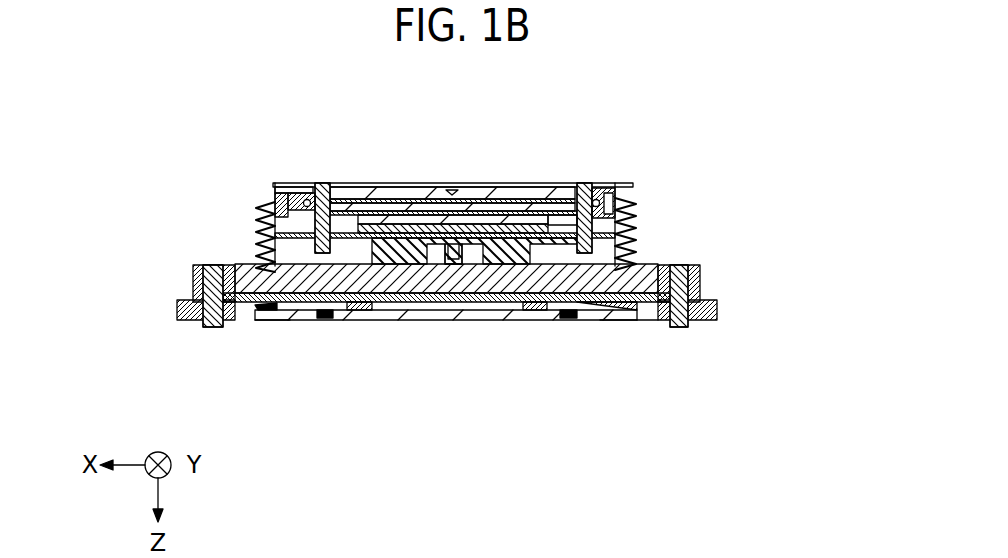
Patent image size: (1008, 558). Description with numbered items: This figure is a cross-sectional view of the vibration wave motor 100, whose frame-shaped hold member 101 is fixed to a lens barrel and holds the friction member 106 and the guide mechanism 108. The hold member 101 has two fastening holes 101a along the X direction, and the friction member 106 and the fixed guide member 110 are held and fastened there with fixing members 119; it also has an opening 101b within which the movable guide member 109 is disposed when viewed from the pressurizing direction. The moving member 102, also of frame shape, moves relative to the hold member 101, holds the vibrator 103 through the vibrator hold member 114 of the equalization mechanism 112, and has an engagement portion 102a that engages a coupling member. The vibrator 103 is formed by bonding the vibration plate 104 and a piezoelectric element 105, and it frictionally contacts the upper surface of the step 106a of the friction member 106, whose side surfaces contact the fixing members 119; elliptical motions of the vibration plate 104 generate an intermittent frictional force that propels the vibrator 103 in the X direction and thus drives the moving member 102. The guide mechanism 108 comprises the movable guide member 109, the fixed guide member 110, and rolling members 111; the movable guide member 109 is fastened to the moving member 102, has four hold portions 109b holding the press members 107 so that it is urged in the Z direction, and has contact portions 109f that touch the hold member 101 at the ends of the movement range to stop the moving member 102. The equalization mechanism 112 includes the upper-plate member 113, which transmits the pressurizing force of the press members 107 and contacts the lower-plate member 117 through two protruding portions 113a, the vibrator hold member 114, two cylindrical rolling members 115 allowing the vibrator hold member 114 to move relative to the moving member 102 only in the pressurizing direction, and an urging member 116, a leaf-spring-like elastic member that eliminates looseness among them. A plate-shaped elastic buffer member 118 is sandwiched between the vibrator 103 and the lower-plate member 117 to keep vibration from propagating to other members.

The vibration wave motor 100 is at (146, 76).
The hold member 101 is at (177, 303).
The fastening holes 101a is at (188, 320).
The opening 101b is at (653, 322).
The moving member 102 is at (273, 190).
The engagement portion 102a is at (452, 266).
The vibrator 103 is at (797, 178).
The vibration plate 104 is at (530, 230).
The piezoelectric element 105 is at (550, 221).
The friction member 106 is at (253, 265).
The step 106a is at (570, 258).
The press members 107 is at (255, 228).
The guide mechanism 108 is at (333, 389).
The movable guide member 109 is at (403, 321).
The hold portions 109b is at (271, 322).
The contact portions 109f is at (321, 320).
The fixed guide member 110 is at (449, 265).
The rolling members 111 is at (362, 311).
The equalization mechanism 112 is at (237, 112).
The upper-plate member 113 is at (506, 185).
The protruding portions 113a is at (452, 189).
The vibrator hold member 114 is at (318, 186).
The rolling members 115 is at (309, 185).
The urging member 116 is at (290, 186).
The lower-plate member 117 is at (403, 185).
The buffer member 118 is at (630, 190).
The fixing members 119 is at (195, 277).